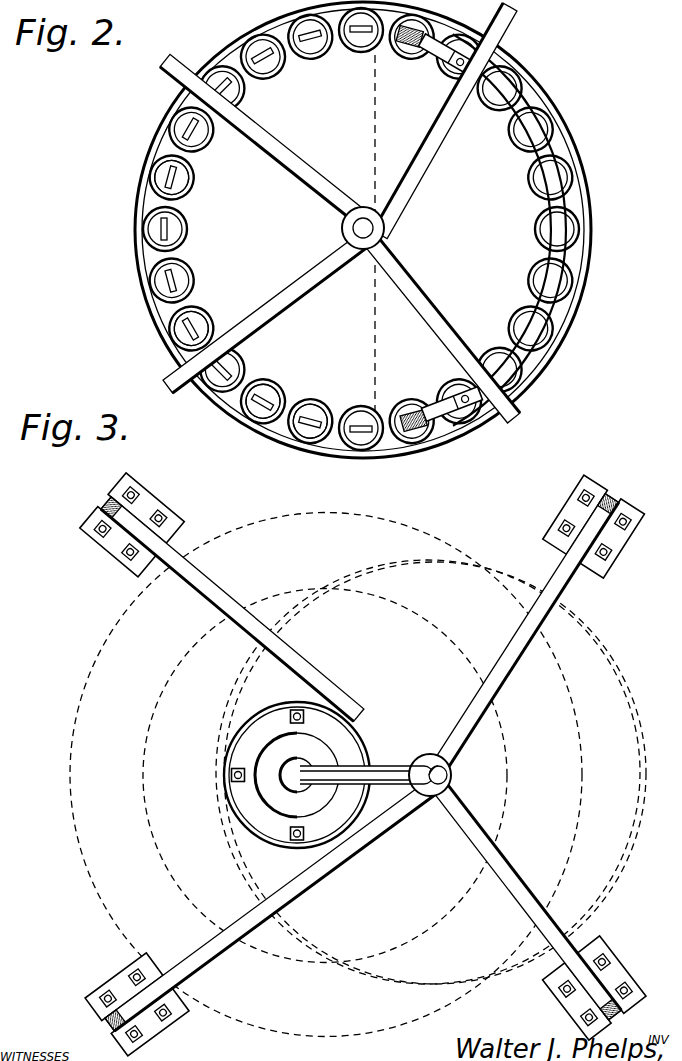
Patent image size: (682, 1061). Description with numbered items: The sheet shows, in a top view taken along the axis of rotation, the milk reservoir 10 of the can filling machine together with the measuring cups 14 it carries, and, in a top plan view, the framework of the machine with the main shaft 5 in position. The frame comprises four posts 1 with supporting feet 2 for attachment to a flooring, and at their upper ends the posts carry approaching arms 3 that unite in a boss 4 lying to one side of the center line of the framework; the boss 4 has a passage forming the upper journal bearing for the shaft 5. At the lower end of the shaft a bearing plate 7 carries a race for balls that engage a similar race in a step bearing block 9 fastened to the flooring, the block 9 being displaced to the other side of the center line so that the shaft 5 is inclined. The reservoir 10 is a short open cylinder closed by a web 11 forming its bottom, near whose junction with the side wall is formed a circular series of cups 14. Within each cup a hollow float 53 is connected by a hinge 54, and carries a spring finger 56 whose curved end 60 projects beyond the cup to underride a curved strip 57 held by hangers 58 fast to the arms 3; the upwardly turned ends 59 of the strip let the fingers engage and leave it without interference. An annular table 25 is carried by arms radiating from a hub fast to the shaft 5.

In FIG. 3, the posts 1 is at (104, 507).
In FIG. 3, the supporting feet 2 is at (148, 506).
In FIG. 2, the approaching arms 3 is at (327, 198).
In FIG. 3, the approaching arms 3 is at (220, 600).
In FIG. 2, the boss 4 is at (360, 250).
In FIG. 3, the boss 4 is at (433, 795).
In FIG. 2, the shaft 5 is at (363, 224).
In FIG. 3, the shaft 5 is at (364, 780).
In FIG. 3, the bearing plate 7 is at (345, 775).
In FIG. 3, the step bearing block 9 is at (286, 775).
In FIG. 2, the reservoir 10 is at (162, 238).
In FIG. 3, the reservoir 10 is at (236, 710).
In FIG. 2, the web 11 is at (238, 241).
In FIG. 2, the cups 14 is at (275, 78).
In FIG. 3, the annular table 25 is at (75, 720).
In FIG. 2, the float 53 is at (326, 418).
In FIG. 2, the hinge 54 is at (274, 395).
In FIG. 2, the spring finger 56 is at (192, 325).
In FIG. 2, the curved strip 57 is at (550, 178).
In FIG. 2, the hangers 58 is at (450, 68).
In FIG. 2, the upwardly turned ends 59 is at (402, 46).
In FIG. 2, the curved ends 60 is at (205, 148).